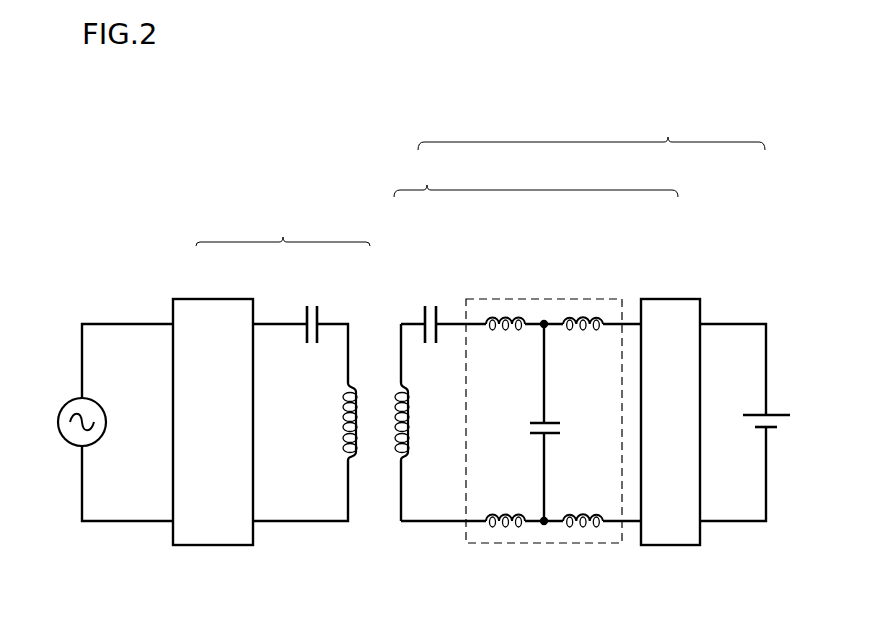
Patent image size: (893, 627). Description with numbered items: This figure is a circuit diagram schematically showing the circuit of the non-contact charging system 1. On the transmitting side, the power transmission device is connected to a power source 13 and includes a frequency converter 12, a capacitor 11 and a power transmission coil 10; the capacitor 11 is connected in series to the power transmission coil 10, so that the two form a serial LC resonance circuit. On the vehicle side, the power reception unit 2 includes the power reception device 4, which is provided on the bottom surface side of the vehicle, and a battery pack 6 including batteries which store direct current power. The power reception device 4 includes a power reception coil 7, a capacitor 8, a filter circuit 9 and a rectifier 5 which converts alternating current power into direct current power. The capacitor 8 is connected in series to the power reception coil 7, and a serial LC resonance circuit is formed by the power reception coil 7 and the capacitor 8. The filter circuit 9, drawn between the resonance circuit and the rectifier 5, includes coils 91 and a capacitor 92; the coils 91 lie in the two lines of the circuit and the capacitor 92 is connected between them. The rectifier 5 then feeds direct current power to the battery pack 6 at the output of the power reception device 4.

The non-contact charging system 1 is at (341, 182).
The power reception unit 2 is at (586, 347).
The power reception device 4 is at (530, 368).
The rectifier 5 is at (676, 299).
The battery pack 6 is at (770, 413).
The power reception coil 7 is at (398, 400).
The capacitor 8 is at (436, 312).
The filter circuit 9 is at (543, 299).
The power transmission coil 10 is at (358, 398).
The capacitor 11 is at (305, 318).
The frequency converter 12 is at (214, 299).
The power source 13 is at (57, 421).
The coil 91 is at (508, 313).
The capacitor 92 is at (550, 422).